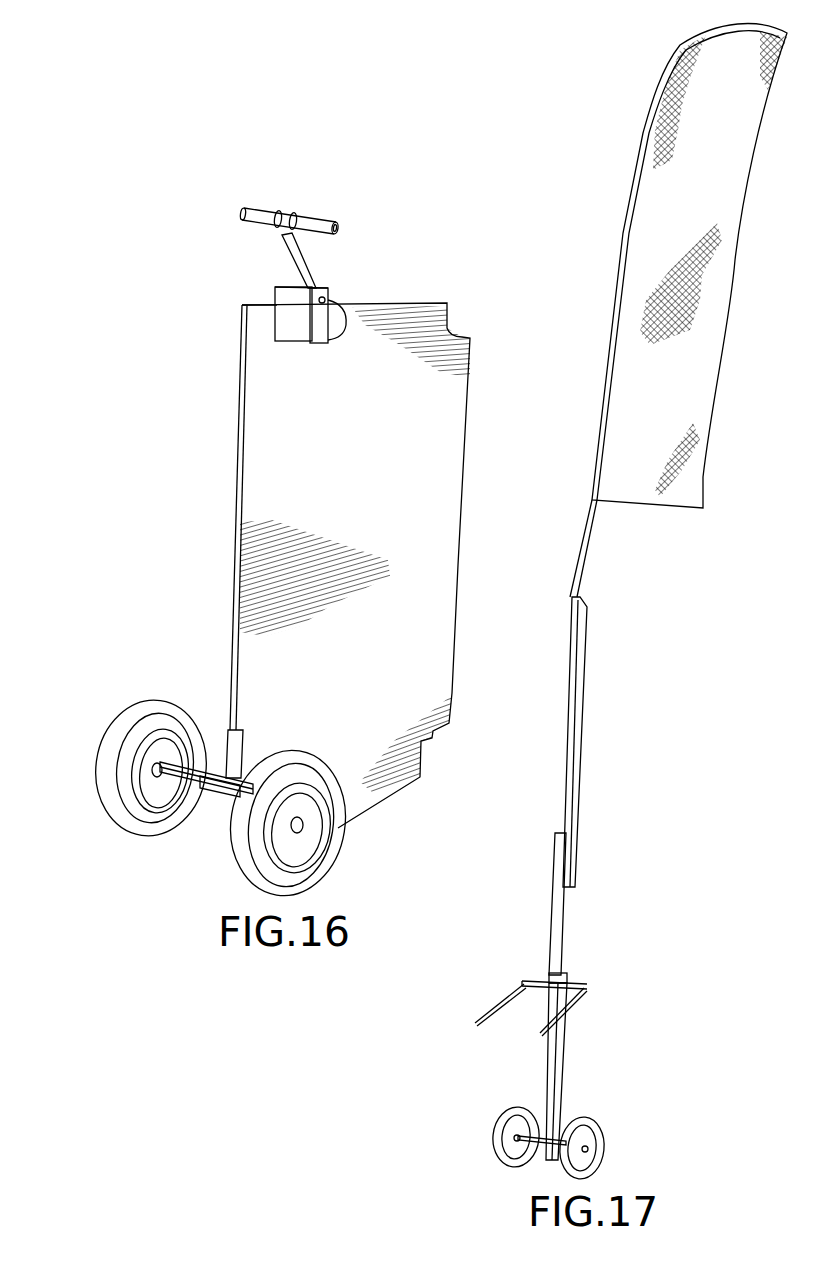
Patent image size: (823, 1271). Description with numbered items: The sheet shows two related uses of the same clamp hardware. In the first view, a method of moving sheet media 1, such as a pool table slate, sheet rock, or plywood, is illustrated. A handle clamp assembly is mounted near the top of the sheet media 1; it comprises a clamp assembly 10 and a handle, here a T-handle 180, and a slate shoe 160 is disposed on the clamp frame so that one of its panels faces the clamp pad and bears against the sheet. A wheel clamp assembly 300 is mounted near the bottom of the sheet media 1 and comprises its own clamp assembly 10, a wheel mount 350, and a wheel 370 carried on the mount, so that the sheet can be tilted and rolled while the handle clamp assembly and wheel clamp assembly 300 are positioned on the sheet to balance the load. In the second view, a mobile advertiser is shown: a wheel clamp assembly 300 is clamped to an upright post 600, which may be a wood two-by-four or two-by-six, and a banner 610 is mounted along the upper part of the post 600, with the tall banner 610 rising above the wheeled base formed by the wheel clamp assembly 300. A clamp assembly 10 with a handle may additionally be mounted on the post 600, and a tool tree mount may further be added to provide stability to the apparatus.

In FIG. 16, the sheet media 1 is at (233, 458).
In FIG. 16, the clamp assembly 10 is at (284, 287).
In FIG. 16, the slate shoe 160 is at (278, 325).
In FIG. 16, the T-handle 180 is at (244, 214).
In FIG. 16, the wheel clamp assembly 300 is at (76, 819).
In FIG. 17, the wheel clamp assembly 300 is at (545, 1132).
In FIG. 16, the wheel mount 350 is at (203, 795).
In FIG. 16, the wheel 370 is at (116, 730).
In FIG. 17, the post 600 is at (570, 1045).
In FIG. 17, the banner 610 is at (708, 442).